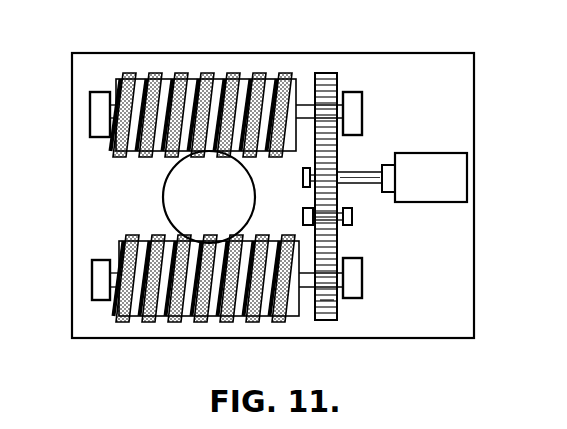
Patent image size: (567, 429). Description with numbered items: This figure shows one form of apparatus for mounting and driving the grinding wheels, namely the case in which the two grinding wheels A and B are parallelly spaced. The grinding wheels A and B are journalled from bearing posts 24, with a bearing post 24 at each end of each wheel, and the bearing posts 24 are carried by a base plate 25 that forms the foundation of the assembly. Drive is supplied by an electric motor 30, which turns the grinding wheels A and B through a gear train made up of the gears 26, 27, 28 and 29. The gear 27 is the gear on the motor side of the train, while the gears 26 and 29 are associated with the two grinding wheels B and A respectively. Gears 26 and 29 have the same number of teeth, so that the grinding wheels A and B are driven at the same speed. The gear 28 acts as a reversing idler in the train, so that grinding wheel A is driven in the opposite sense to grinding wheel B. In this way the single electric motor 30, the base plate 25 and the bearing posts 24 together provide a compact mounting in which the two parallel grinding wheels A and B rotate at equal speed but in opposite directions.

The bearing posts 24 is at (100, 123).
The base plate 25 is at (80, 307).
The gear 26 is at (323, 75).
The gear 27 is at (336, 169).
The gear 28 is at (338, 225).
The gear 29 is at (331, 321).
The electric motor 30 is at (458, 172).
The grinding wheel A is at (208, 322).
The grinding wheel B is at (180, 78).